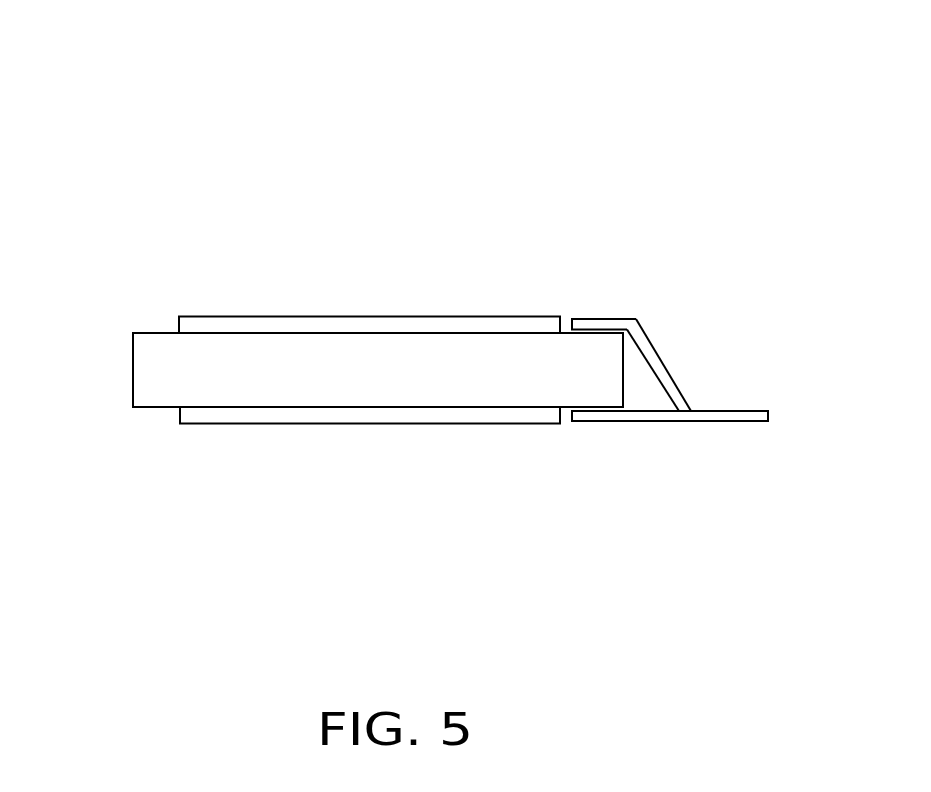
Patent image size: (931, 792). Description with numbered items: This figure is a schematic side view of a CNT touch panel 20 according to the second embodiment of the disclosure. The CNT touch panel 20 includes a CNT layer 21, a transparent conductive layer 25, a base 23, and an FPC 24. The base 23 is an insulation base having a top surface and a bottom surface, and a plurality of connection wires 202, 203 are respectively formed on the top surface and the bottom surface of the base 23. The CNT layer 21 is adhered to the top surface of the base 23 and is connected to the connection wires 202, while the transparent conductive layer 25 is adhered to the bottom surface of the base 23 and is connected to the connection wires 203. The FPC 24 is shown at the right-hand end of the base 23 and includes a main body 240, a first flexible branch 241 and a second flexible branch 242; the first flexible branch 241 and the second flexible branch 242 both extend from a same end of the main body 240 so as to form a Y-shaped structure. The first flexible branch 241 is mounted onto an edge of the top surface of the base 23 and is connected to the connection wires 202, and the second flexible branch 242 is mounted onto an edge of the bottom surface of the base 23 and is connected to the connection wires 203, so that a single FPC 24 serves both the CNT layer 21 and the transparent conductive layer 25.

The CNT touch panel 20 is at (420, 68).
The CNT layer 21 is at (293, 322).
The base 23 is at (160, 360).
The transparent conductive layer 25 is at (253, 413).
The FPC 24 is at (763, 410).
The connection wires 202 is at (592, 332).
The connection wires 203 is at (598, 420).
The main body 240 is at (731, 417).
The first flexible branch 241 is at (642, 338).
The second flexible branch 242 is at (643, 412).